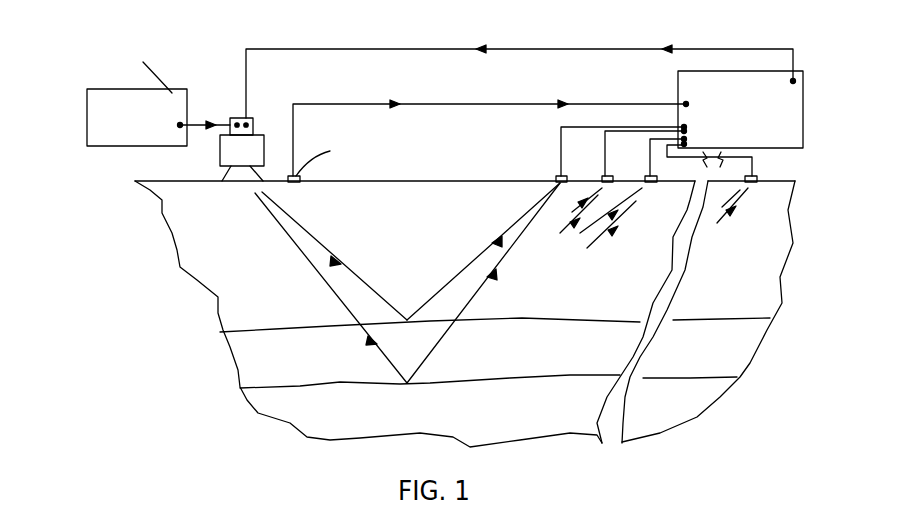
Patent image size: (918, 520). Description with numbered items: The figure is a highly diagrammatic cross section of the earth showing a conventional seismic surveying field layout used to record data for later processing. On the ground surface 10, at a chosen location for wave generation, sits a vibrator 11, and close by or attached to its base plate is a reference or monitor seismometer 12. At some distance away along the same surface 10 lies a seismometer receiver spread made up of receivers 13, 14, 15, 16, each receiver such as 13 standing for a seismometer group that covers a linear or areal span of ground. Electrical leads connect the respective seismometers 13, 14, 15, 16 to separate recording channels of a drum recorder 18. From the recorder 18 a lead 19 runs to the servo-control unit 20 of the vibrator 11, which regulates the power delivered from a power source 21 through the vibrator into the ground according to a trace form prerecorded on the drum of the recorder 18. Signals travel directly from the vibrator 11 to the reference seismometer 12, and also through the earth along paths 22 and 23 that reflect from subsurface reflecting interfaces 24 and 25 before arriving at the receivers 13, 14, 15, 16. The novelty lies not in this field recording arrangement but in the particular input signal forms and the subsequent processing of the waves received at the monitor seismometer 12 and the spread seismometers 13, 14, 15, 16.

The ground surface 10 is at (428, 184).
The vibrator 11 is at (228, 178).
The reference or monitor seismometer 12 is at (294, 176).
The seismometer receiver 13 is at (557, 177).
The seismometer receiver 14 is at (605, 176).
The seismometer receiver 15 is at (650, 176).
The seismometer receiver 16 is at (758, 178).
The drum recorder 18 is at (803, 108).
The lead 19 is at (583, 49).
The servo-control unit 20 is at (243, 118).
The power source 21 is at (118, 143).
The path 22 is at (445, 285).
The path 23 is at (432, 350).
The subsurface reflecting interface 24 is at (522, 318).
The subsurface reflecting interface 25 is at (510, 378).